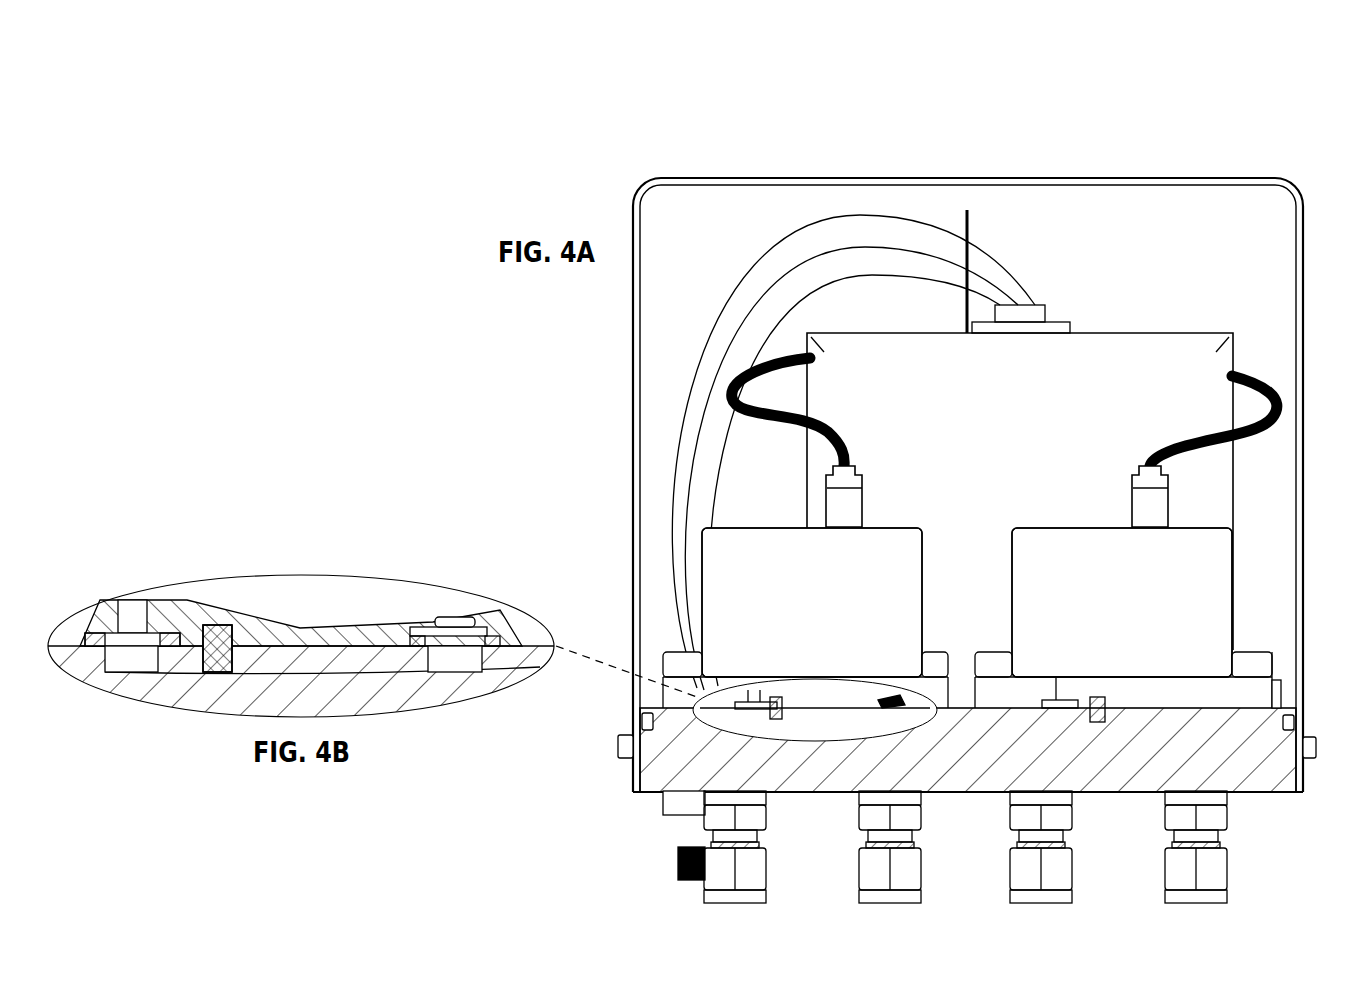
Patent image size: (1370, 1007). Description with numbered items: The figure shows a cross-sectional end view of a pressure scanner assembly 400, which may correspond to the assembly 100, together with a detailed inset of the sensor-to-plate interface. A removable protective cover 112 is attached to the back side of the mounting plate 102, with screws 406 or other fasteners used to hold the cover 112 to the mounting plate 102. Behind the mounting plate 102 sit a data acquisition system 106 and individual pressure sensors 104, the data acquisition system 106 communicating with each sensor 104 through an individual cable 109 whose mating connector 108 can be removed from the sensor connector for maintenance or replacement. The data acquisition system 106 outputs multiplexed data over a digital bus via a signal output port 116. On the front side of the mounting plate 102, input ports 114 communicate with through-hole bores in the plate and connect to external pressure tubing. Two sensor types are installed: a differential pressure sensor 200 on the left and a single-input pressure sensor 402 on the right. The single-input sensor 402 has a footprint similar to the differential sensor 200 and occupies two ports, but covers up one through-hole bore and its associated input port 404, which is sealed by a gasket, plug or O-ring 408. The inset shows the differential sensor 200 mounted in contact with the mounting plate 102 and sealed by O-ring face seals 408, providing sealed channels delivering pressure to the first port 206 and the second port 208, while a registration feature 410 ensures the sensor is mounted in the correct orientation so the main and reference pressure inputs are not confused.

In FIG. 4A, the pressure scanner assembly 400 is at (874, 138).
In FIG. 4A, the assembly 100 is at (925, 511).
In FIG. 4A, the protective cover 112 is at (633, 405).
In FIG. 4A, the mounting plate 102 is at (1230, 769).
In FIG. 4A, the data acquisition system 106 is at (1016, 388).
In FIG. 4A, the pressure sensor 104 is at (758, 566).
In FIG. 4A, the differential pressure sensor 200 is at (836, 646).
In FIG. 4A, the single-input pressure sensor 402 is at (1160, 646).
In FIG. 4A, the cable 109 is at (848, 452).
In FIG. 4A, the mating connector 108 is at (1140, 512).
In FIG. 4A, the input port 404 is at (1176, 707).
In FIG. 4A, the screw 406 is at (617, 746).
In FIG. 4A, the signal output port 116 is at (678, 862).
In FIG. 4A, the input port 114 is at (1230, 868).
In FIG. 4B, the O-ring face seal 408 is at (314, 572).
In FIG. 4B, the first port 206 is at (127, 633).
In FIG. 4B, the second port 208 is at (440, 618).
In FIG. 4B, the registration feature 410 is at (212, 672).